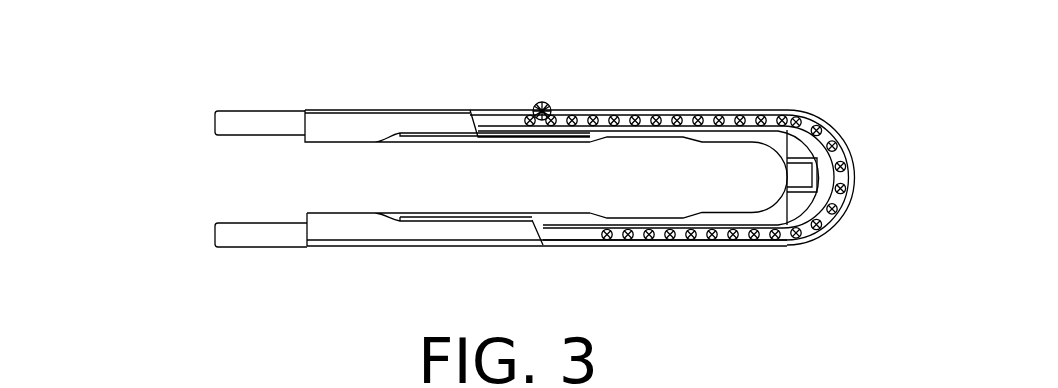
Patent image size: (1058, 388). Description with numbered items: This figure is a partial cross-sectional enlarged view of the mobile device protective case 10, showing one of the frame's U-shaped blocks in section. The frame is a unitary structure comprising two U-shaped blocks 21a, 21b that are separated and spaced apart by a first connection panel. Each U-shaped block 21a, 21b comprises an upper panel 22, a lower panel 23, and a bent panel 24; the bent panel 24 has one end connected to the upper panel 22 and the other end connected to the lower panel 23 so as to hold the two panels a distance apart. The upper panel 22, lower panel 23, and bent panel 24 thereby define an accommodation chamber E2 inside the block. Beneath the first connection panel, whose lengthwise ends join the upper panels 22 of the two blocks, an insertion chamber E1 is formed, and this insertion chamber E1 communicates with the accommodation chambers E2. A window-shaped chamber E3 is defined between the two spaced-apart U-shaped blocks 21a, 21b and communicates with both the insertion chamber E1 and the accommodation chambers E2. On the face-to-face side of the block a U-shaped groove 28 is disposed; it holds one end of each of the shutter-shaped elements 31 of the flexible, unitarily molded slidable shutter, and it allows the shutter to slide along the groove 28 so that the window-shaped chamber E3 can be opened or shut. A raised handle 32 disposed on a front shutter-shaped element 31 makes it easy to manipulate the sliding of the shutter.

The mobile device protective case 10 is at (783, 75).
The U-shaped block 21a is at (858, 140).
The U-shaped block 21b is at (316, 254).
The upper panel 22 is at (363, 110).
The lower panel 23 is at (360, 248).
The bent panel 24 is at (850, 177).
The U-shaped groove 28 is at (502, 120).
The shutter-shaped elements 31 is at (628, 118).
The raised handle 32 is at (542, 102).
The insertion chamber E1 is at (287, 183).
The accommodation chamber E2 is at (520, 191).
The window-shaped chamber E3 is at (684, 173).